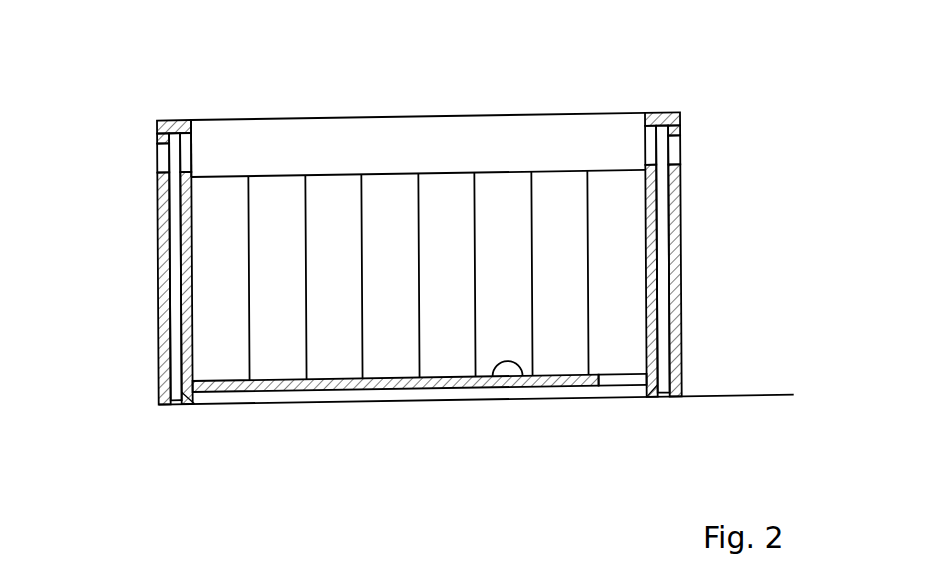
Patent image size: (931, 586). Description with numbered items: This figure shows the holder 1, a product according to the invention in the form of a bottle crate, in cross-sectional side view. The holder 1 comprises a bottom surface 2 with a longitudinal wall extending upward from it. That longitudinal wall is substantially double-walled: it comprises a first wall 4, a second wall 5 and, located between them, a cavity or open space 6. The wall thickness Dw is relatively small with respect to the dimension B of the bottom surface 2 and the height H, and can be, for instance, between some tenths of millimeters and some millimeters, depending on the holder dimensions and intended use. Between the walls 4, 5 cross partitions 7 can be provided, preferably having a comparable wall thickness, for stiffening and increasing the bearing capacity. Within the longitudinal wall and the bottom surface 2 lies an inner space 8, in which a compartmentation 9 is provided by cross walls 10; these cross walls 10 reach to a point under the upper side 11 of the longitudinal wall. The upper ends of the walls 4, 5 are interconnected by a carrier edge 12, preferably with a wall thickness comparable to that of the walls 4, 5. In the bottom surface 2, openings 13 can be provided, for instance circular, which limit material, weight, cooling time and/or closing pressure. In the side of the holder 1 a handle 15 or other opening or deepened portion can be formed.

The holder 1 is at (421, 249).
The bottom surface 2 is at (521, 385).
The first wall 4 is at (184, 203).
The second wall 5 is at (160, 236).
The cavity 6 is at (176, 273).
The cross partitions 7 is at (662, 214).
The inner space 8 is at (393, 132).
The compartmentation 9 is at (335, 151).
The cross walls 10 is at (305, 177).
The upper side 11 is at (193, 101).
The carrier edge 12 is at (164, 120).
The openings 13 is at (617, 389).
The handle 15 is at (695, 159).
The wall thickness Dw is at (739, 317).
The height H is at (680, 120).
The dimension of the bottom surface B is at (648, 392).